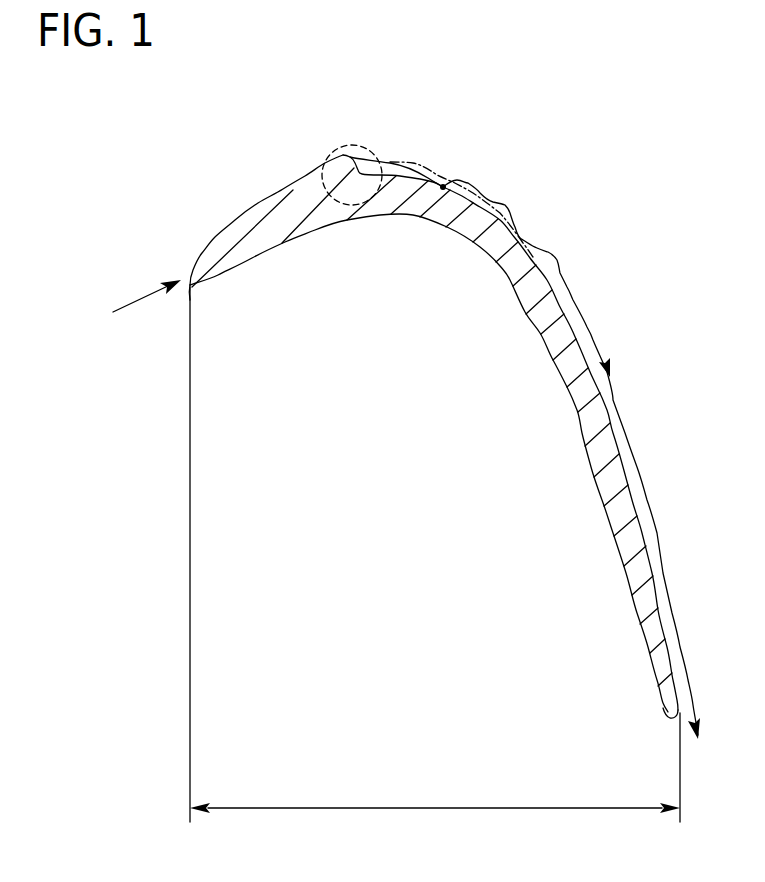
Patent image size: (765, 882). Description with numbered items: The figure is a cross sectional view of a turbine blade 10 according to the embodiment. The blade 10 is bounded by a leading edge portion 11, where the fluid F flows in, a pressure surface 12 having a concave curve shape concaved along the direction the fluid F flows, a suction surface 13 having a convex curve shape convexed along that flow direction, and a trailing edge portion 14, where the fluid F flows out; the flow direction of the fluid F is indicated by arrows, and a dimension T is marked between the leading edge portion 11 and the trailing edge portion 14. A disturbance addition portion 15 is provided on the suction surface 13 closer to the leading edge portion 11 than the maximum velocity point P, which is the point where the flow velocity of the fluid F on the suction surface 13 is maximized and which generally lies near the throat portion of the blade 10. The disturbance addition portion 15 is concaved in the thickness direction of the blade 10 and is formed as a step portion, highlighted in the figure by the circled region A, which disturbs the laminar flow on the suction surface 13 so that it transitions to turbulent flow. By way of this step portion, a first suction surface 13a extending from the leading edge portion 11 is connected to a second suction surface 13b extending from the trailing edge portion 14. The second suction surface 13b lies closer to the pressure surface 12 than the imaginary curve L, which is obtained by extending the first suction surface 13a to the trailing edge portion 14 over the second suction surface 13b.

The blade 10 is at (450, 413).
The leading edge portion 11 is at (191, 287).
The pressure surface 12 is at (386, 217).
The suction surface 13 is at (445, 388).
The first suction surface 13a is at (277, 194).
The second suction surface 13b is at (473, 203).
The trailing edge portion 14 is at (674, 718).
The disturbance addition portion 15 is at (356, 156).
The enlarged region indicator A is at (369, 146).
The imaginary curve L is at (391, 161).
The maximum velocity point P is at (444, 184).
The fluid F is at (137, 302).
The blade width dimension T is at (435, 554).